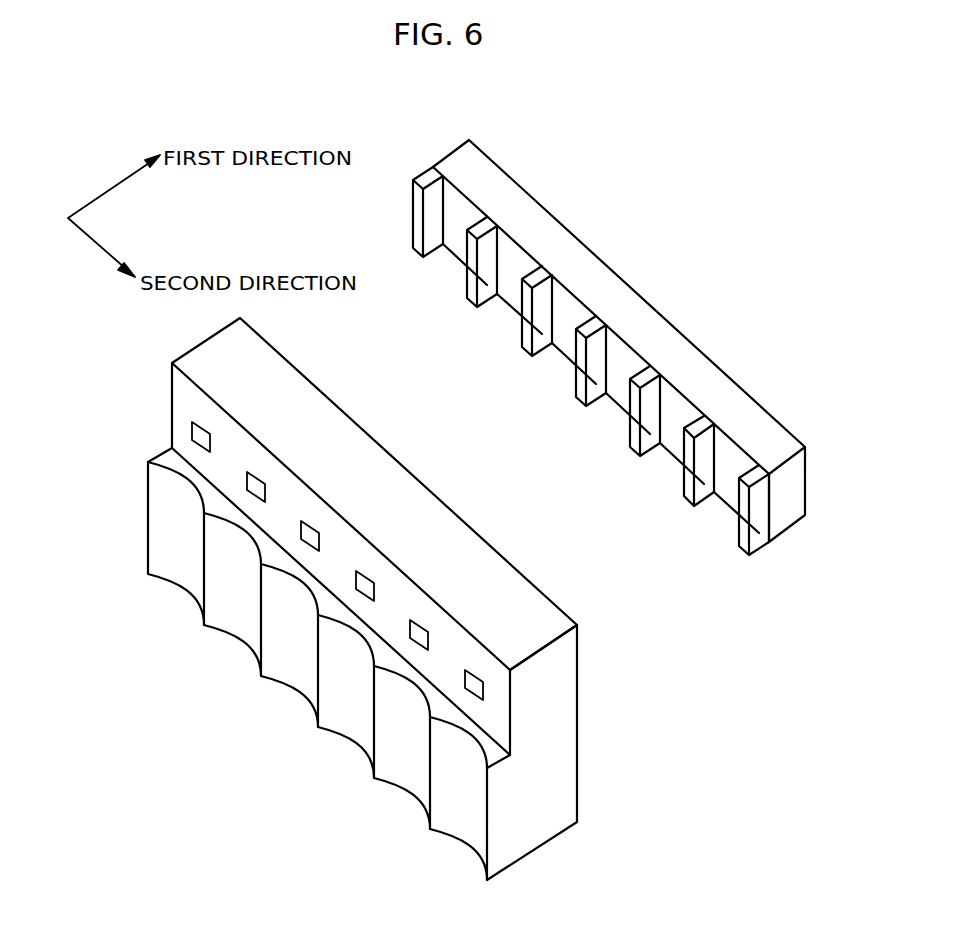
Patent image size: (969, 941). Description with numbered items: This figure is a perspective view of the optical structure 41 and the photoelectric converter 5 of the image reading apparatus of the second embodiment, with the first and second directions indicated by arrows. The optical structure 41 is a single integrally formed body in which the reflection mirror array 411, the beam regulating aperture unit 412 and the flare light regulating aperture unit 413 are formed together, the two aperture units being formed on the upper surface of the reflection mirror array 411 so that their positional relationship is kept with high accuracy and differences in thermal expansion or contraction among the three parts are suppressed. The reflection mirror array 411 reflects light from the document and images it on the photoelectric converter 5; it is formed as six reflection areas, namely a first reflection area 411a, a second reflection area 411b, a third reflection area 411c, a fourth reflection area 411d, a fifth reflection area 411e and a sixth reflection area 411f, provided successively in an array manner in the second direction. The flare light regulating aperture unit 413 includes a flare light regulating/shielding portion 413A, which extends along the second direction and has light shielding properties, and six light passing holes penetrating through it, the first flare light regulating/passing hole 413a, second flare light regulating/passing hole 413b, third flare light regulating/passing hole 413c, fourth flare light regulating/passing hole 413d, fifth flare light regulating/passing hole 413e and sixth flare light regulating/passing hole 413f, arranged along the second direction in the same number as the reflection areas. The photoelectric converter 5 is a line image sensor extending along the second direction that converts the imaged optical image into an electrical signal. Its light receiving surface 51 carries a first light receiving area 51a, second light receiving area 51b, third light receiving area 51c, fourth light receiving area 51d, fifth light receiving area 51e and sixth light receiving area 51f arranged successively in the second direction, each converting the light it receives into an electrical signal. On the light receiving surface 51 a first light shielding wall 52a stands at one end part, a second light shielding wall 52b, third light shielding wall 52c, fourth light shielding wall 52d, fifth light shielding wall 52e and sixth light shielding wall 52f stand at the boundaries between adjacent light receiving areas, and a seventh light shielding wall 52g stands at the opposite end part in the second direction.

The photoelectric converter 5 is at (778, 458).
The light receiving surface 51 is at (648, 321).
The first light receiving area 51a is at (463, 210).
The second light receiving area 51b is at (517, 260).
The third light receiving area 51c is at (572, 310).
The fourth light receiving area 51d is at (626, 359).
The fifth light receiving area 51e is at (680, 409).
The sixth light receiving area 51f is at (735, 459).
The first light shielding wall 52a is at (414, 230).
The second light shielding wall 52b is at (468, 280).
The third light shielding wall 52c is at (523, 330).
The fourth light shielding wall 52d is at (577, 380).
The fifth light shielding wall 52e is at (631, 430).
The sixth light shielding wall 52f is at (685, 480).
The seventh light shielding wall 52g is at (740, 530).
The optical structure 41 is at (663, 640).
The reflection mirror array 411 is at (493, 758).
The first reflection area 411a is at (176, 566).
The second reflection area 411b is at (232, 617).
The third reflection area 411c is at (289, 668).
The fourth reflection area 411d is at (346, 719).
The fifth reflection area 411e is at (402, 770).
The sixth reflection area 411f is at (458, 821).
The beam regulating aperture unit 412 is at (580, 657).
The flare light regulating aperture unit 413 is at (500, 708).
The flare light regulating/shielding portion 413A is at (180, 406).
The first flare light regulating/passing hole 413a is at (202, 429).
The second flare light regulating/passing hole 413b is at (257, 478).
The third flare light regulating/passing hole 413c is at (311, 528).
The fourth flare light regulating/passing hole 413d is at (366, 578).
The fifth flare light regulating/passing hole 413e is at (420, 627).
The sixth flare light regulating/passing hole 413f is at (475, 677).